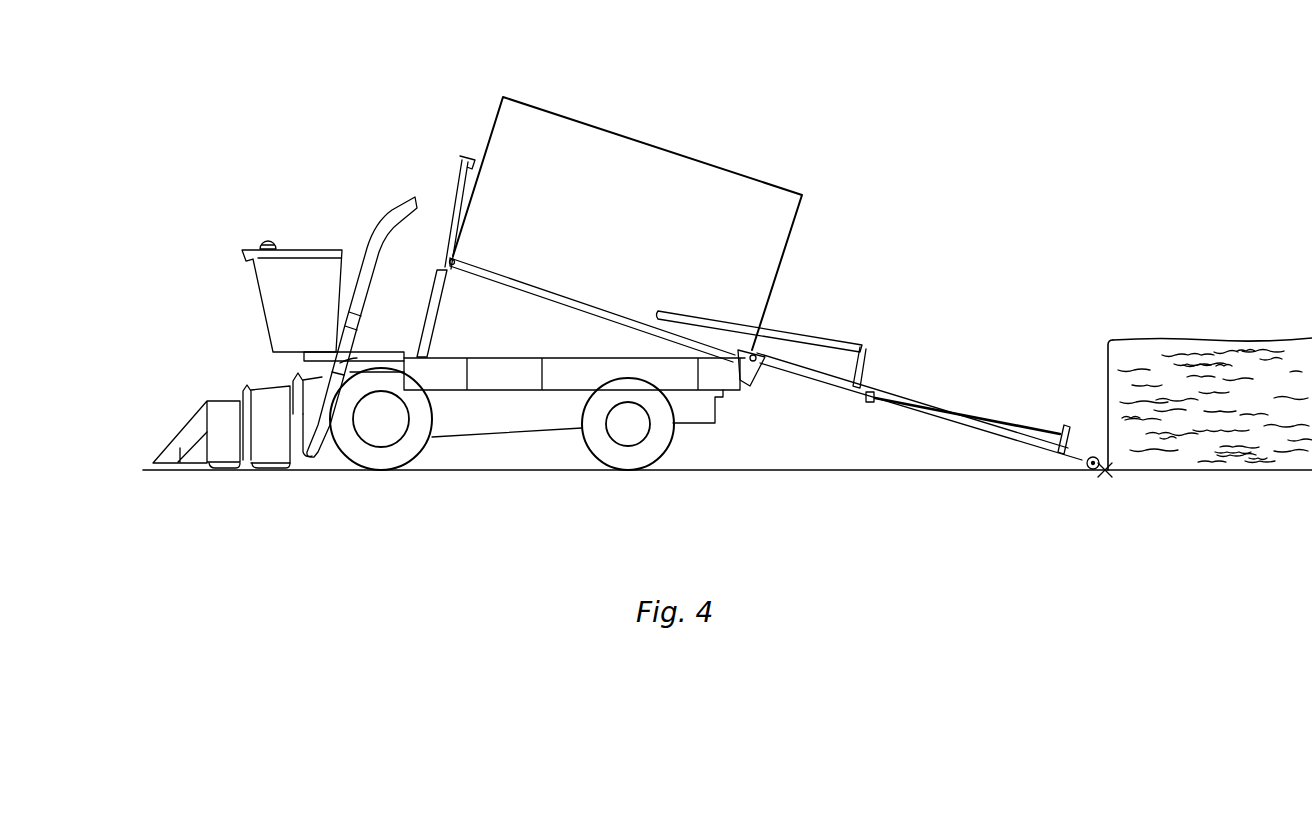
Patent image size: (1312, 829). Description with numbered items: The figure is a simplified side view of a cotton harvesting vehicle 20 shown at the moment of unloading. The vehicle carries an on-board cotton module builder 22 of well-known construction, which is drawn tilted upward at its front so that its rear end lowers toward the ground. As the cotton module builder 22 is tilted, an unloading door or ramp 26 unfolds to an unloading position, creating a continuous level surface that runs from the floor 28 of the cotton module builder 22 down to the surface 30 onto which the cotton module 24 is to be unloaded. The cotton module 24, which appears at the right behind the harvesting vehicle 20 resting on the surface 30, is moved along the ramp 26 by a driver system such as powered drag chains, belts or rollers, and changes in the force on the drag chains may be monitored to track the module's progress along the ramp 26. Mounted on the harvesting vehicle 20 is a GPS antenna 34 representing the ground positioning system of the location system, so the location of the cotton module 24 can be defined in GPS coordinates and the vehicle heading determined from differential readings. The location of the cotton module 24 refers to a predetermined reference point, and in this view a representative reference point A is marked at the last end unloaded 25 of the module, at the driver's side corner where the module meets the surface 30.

The cotton harvesting vehicle 20 is at (744, 78).
The cotton module builder 22 is at (781, 187).
The cotton module 24 is at (1208, 340).
The last end unloaded 25 is at (1107, 357).
The unloading door or ramp 26 is at (869, 379).
The floor 28 is at (607, 302).
The surface 30 is at (775, 468).
The GPS antenna 34 is at (268, 238).
The reference point A is at (1104, 480).